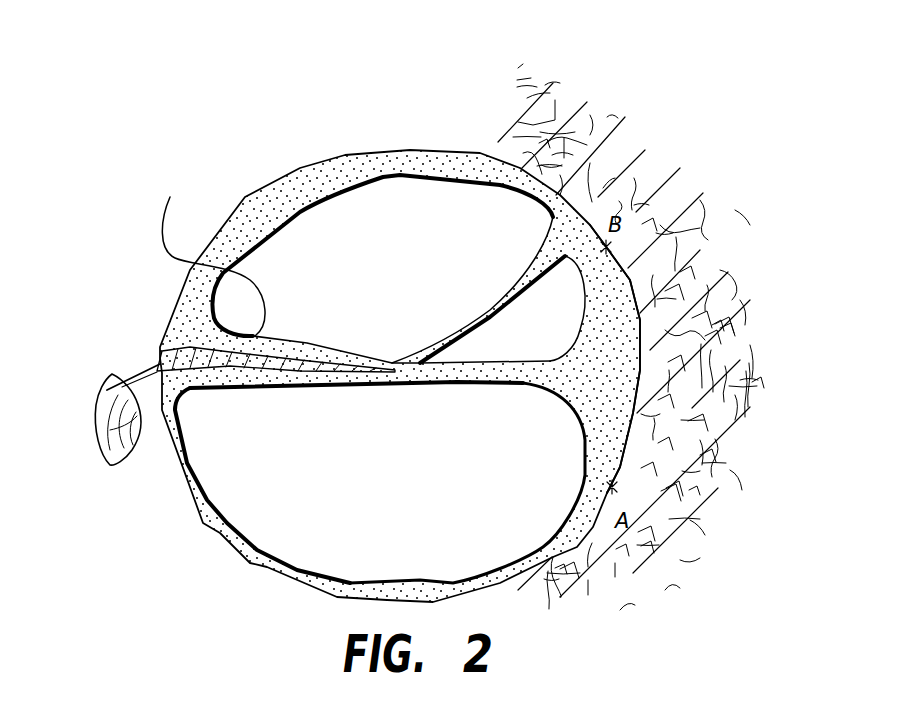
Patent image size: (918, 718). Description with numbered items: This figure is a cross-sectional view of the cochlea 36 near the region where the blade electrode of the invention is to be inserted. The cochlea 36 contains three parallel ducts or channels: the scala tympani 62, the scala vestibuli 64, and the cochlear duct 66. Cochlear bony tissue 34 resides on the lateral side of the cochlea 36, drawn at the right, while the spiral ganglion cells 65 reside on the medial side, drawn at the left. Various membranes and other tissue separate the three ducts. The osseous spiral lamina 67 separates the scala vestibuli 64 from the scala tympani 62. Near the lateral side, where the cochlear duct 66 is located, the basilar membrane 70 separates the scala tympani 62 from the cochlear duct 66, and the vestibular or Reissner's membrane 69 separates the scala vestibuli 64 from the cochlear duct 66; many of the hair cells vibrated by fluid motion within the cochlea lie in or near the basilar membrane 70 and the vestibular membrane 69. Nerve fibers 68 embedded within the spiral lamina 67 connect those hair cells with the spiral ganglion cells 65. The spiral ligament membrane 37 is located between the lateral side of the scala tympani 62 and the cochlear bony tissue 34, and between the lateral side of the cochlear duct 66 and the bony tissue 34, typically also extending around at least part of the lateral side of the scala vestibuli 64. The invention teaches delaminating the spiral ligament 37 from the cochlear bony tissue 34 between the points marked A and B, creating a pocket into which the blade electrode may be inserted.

The cochlea 36 is at (238, 148).
The spiral ligament membrane 37 is at (618, 379).
The cochlear bony tissue 34 is at (697, 239).
The scala vestibuli 64 is at (341, 289).
The cochlear duct 66 is at (557, 329).
The scala tympani 62 is at (408, 487).
The vestibular (Reissner's) membrane 69 is at (500, 293).
The basilar membrane 70 is at (453, 385).
The osseous spiral lamina 67 is at (212, 255).
The nerve fibers 68 is at (273, 371).
The spiral ganglion cells 65 is at (95, 430).